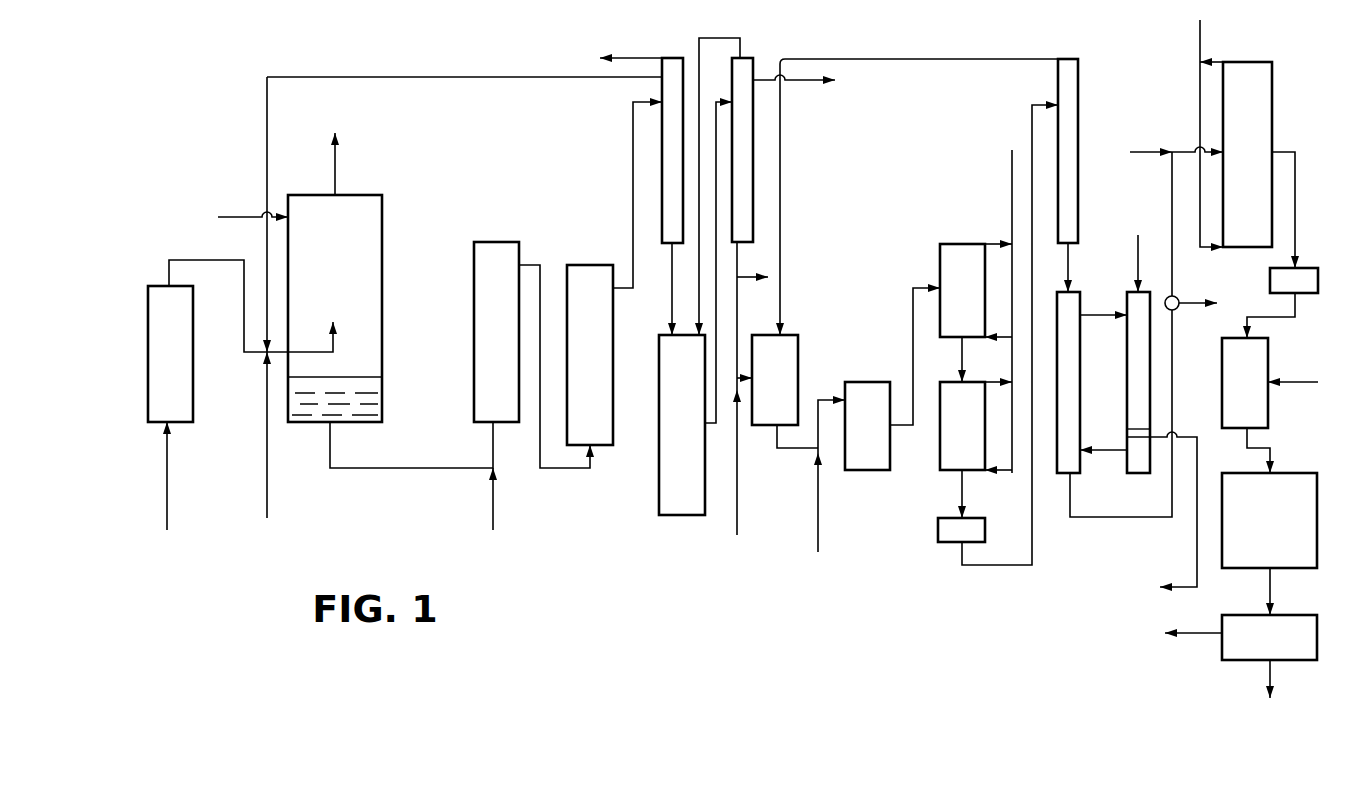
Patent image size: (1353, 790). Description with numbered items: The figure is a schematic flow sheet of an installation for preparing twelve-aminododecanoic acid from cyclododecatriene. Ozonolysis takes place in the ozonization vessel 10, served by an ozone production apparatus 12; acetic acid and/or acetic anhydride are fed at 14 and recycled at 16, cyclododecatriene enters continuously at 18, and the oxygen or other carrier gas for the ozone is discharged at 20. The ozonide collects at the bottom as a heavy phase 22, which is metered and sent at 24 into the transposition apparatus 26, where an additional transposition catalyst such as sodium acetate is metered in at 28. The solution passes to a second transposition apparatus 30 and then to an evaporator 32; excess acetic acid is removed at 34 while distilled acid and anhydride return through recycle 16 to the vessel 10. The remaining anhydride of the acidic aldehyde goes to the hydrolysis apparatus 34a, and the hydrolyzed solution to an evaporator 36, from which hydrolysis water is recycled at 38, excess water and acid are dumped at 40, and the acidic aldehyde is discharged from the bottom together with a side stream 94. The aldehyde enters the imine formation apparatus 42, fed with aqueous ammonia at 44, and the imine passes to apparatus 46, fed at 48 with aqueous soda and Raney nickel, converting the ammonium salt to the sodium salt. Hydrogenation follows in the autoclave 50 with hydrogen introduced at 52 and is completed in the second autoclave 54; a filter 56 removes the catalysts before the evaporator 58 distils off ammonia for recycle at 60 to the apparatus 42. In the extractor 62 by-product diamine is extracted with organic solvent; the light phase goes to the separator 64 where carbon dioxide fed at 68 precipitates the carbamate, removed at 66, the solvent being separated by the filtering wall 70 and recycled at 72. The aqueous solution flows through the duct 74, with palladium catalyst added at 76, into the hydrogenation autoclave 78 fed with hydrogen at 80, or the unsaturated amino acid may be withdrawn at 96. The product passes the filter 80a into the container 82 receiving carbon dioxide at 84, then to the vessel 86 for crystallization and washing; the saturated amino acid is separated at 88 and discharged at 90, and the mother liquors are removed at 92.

The ozonization vessel 10 is at (365, 267).
The ozone production apparatus 12 is at (183, 355).
The acetic acid feed 14 is at (263, 495).
The acetic acid recycle 16 is at (388, 78).
The cyclododecatriene feed 18 is at (237, 215).
The carrier gas discharge 20 is at (338, 163).
The heavy phase 22 is at (367, 400).
The heavy phase transfer line 24 is at (417, 470).
The transposition apparatus 26 is at (480, 323).
The transposition catalyst feed 28 is at (493, 515).
The second transposition apparatus 30 is at (588, 265).
The evaporator 32 is at (670, 138).
The excess acetic acid outlet 34 is at (633, 53).
The hydrolysis apparatus 34a is at (665, 478).
The evaporator 36 is at (745, 140).
The hydrolysis water recycle 38 is at (713, 35).
The water dump outlet 40 is at (795, 83).
The imine formation apparatus 42 is at (785, 343).
The aqueous ammonia feed 44 is at (737, 508).
The salt conversion apparatus 46 is at (865, 400).
The soda and Raney nickel feed 48 is at (820, 523).
The hydrogenation autoclave 50 is at (962, 253).
The hydrogen feed 52 is at (1012, 168).
The second autoclave 54 is at (948, 447).
The filter 56 is at (947, 527).
The evaporator 58 is at (1075, 90).
The ammonia recycle 60 is at (900, 60).
The extractor 62 is at (1073, 335).
The separator 64 is at (1135, 305).
The carbamate removal outlet 66 is at (1197, 560).
The carbon dioxide feed 68 is at (1137, 250).
The filtering wall 70 is at (1128, 430).
The solvent recycle 72 is at (1107, 450).
The duct 74 is at (1080, 517).
The hydrogenation catalyst addition 76 is at (1147, 150).
The hydrogenation autoclave 78 is at (1237, 85).
The hydrogen feed 80 is at (1198, 37).
The filter 80a is at (1277, 278).
The container 82 is at (1257, 360).
The carbon dioxide feed 84 is at (1300, 383).
The crystallization vessel 86 is at (1293, 490).
The amino acid separation 88 is at (1250, 628).
The amino acid discharge 90 is at (1197, 638).
The mother liquor removal 92 is at (1273, 677).
The side stream line 94 is at (740, 277).
The unsaturated amino acid withdrawal 96 is at (1183, 308).